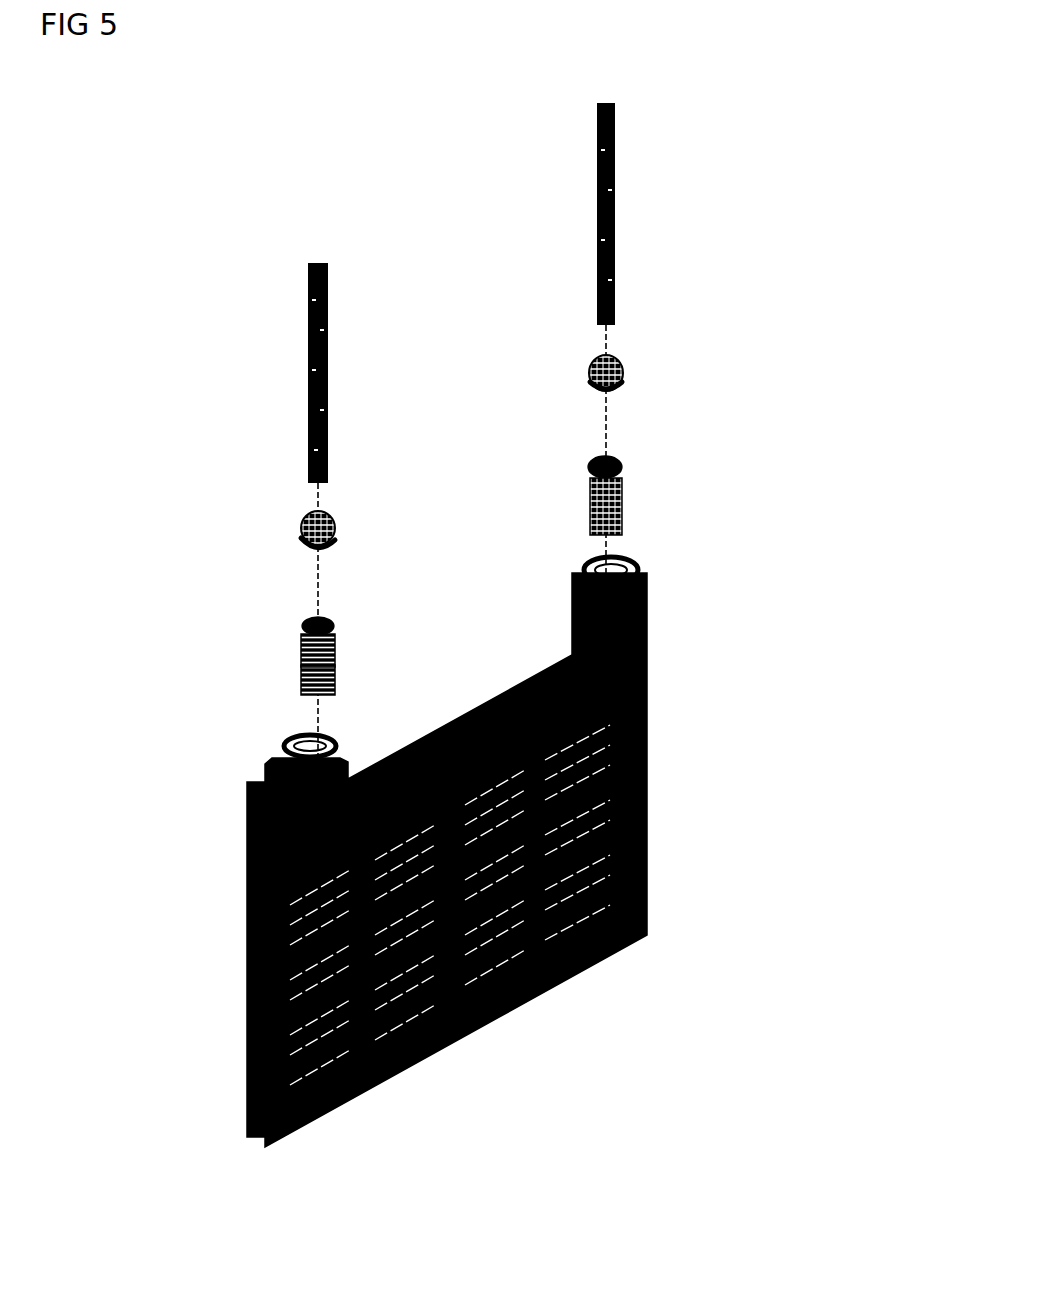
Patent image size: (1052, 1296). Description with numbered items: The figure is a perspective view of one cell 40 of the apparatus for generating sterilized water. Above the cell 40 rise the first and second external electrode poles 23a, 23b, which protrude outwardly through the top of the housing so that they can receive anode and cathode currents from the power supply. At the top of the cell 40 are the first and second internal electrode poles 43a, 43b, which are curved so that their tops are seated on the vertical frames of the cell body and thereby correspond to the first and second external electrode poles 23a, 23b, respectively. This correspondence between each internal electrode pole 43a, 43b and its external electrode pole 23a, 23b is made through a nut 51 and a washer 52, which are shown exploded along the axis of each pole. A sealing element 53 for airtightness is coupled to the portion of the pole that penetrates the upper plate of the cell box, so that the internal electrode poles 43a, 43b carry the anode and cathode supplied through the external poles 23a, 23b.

The cell 40 is at (690, 836).
The first external electrode pole 23a is at (308, 360).
The second external electrode pole 23b is at (617, 212).
The first internal electrode pole 43a is at (283, 757).
The second internal electrode pole 43b is at (640, 560).
The nut 51 is at (300, 519).
The washer 52 is at (332, 546).
The sealing element 53 is at (305, 620).